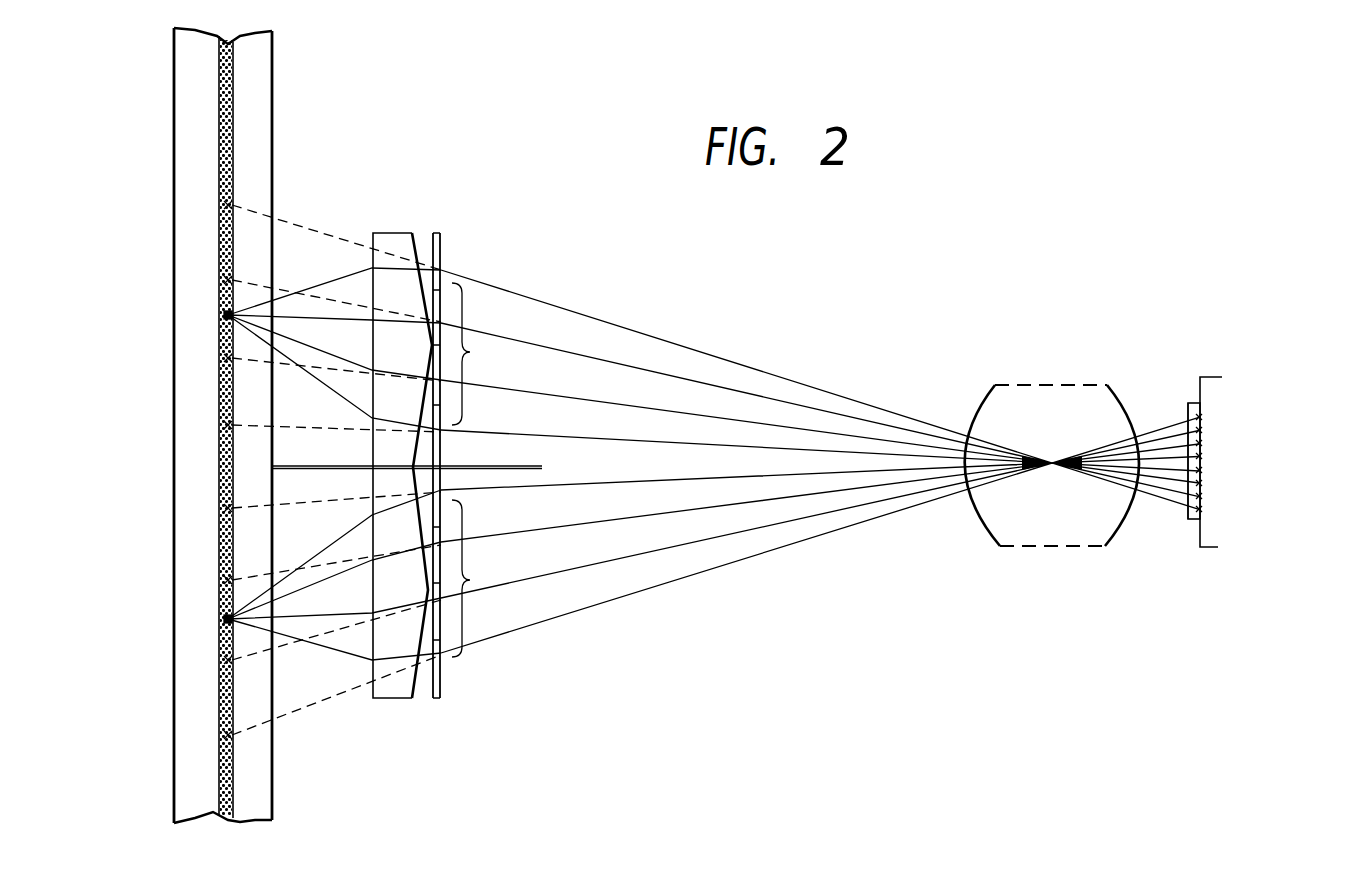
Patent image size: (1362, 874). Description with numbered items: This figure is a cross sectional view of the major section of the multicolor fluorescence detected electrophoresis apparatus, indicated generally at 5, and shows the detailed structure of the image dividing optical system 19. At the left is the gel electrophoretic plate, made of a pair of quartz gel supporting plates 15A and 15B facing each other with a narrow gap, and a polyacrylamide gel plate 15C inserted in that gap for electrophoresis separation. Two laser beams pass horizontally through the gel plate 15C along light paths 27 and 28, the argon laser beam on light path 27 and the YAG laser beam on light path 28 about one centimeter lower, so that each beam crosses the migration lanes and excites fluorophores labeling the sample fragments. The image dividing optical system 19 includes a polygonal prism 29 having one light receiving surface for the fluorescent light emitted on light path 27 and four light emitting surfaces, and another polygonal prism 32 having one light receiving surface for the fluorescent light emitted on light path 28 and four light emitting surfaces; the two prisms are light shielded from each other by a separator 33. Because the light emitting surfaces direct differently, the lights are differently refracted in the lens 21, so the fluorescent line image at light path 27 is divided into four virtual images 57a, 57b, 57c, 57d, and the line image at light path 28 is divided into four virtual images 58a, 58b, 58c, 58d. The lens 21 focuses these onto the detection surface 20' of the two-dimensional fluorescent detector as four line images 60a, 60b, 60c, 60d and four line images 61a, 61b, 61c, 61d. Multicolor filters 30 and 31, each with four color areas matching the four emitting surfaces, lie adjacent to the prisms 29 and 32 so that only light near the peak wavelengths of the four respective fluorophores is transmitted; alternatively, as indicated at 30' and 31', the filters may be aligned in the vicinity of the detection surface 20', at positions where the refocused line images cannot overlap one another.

The optical scanning arrangement 5 is at (220, 425).
The quartz gel supporting plate 15A is at (182, 82).
The quartz gel supporting plate 15B is at (263, 92).
The gel plate 15C is at (232, 58).
The image dividing optical system 19 is at (467, 445).
The lens 21 is at (1009, 383).
The light path 27 is at (222, 315).
The light path 28 is at (222, 620).
The polygonal prism 29 is at (440, 305).
The multicolor filter 30 is at (492, 354).
The multicolor filter 31 is at (500, 578).
The polygonal prism 32 is at (395, 700).
The partition 33 is at (542, 468).
The virtual image 57a is at (234, 204).
The virtual image 57b is at (234, 280).
The virtual image 57c is at (234, 359).
The virtual image 57d is at (234, 426).
The virtual image 58a is at (234, 507).
The virtual image 58b is at (234, 579).
The virtual image 58c is at (234, 661).
The virtual image 58d is at (234, 736).
The line image 60a is at (1203, 509).
The line image 60b is at (1203, 496).
The line image 60c is at (1203, 483).
The line image 60d is at (1203, 470).
The line image 61a is at (1203, 456).
The line image 61b is at (1203, 443).
The line image 61c is at (1203, 430).
The line image 61d is at (1203, 417).
The multicolor filter 31' is at (1173, 421).
The multicolor filter 30' is at (1167, 497).
The detection surface 20' is at (1198, 506).